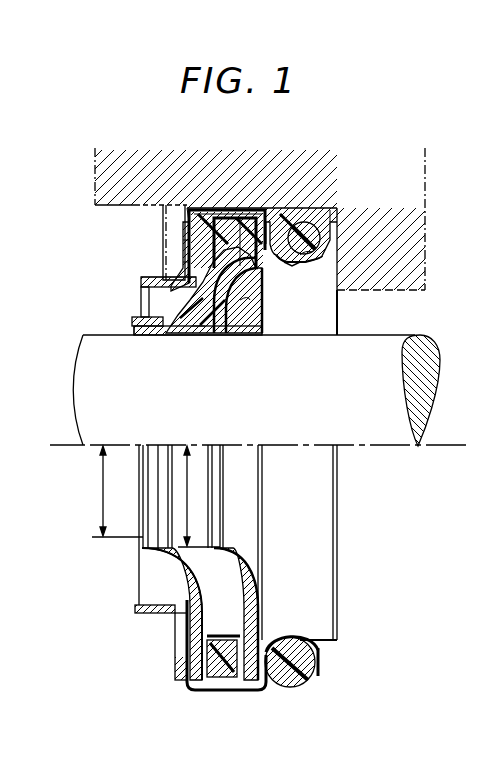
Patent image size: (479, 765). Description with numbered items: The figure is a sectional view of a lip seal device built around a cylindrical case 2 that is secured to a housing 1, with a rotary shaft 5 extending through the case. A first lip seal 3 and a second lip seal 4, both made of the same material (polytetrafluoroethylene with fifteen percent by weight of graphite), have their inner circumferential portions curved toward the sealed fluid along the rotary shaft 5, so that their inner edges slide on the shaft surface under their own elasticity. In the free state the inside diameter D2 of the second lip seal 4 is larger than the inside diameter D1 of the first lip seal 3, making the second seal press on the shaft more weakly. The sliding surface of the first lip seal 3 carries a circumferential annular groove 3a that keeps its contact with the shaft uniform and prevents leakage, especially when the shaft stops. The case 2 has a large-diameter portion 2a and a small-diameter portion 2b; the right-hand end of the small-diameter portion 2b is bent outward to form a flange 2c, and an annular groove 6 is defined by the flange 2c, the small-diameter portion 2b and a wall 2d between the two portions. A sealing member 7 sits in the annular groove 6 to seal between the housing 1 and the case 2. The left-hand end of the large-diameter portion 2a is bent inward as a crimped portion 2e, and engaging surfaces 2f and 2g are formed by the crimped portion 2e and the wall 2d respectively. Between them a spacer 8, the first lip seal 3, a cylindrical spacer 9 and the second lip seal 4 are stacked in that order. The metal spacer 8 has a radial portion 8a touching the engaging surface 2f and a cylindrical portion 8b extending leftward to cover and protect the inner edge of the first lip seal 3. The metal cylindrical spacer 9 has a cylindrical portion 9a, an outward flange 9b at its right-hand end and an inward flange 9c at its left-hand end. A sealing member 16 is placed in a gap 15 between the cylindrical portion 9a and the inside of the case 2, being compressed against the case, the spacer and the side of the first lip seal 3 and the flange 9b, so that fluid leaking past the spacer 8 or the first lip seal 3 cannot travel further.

The housing 1 is at (95, 180).
The cylindrical case 2 is at (256, 205).
The large-diameter portion 2a is at (213, 212).
The small-diameter portion 2b is at (293, 264).
The flange 2c is at (345, 210).
The wall 2d is at (283, 208).
The crimped portion 2e is at (189, 223).
The engaging surface 2f is at (190, 202).
The engaging surface 2g is at (273, 208).
The first lip seal 3 is at (141, 330).
The circumferential annular groove 3a is at (153, 331).
The second lip seal 4 is at (221, 334).
The rotary shaft 5 is at (370, 340).
The annular groove 6 is at (313, 253).
The sealing member 7 is at (311, 212).
The spacer 8 is at (155, 292).
The radial portion 8a is at (189, 247).
The cylindrical portion 8b is at (143, 281).
The cylindrical spacer 9 is at (262, 306).
The cylindrical portion 9a is at (246, 333).
The flange 9b is at (241, 205).
The flange 9c is at (196, 332).
The gap 15 is at (189, 263).
The sealing member 16 is at (217, 208).
The inside diameter of the first lip seal D1 is at (116, 491).
The inside diameter of the second lip seal D2 is at (198, 496).